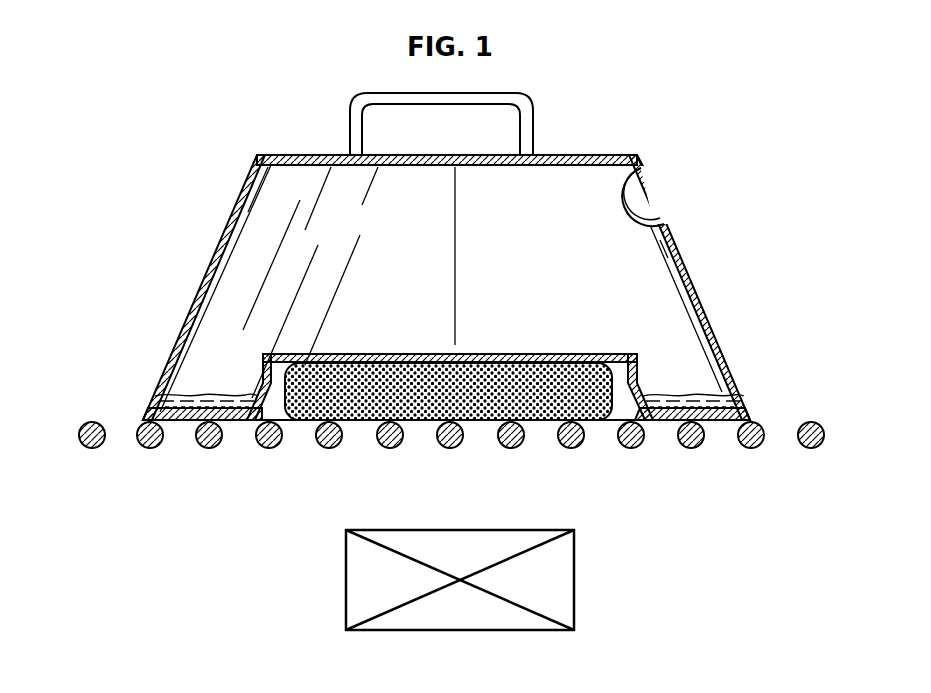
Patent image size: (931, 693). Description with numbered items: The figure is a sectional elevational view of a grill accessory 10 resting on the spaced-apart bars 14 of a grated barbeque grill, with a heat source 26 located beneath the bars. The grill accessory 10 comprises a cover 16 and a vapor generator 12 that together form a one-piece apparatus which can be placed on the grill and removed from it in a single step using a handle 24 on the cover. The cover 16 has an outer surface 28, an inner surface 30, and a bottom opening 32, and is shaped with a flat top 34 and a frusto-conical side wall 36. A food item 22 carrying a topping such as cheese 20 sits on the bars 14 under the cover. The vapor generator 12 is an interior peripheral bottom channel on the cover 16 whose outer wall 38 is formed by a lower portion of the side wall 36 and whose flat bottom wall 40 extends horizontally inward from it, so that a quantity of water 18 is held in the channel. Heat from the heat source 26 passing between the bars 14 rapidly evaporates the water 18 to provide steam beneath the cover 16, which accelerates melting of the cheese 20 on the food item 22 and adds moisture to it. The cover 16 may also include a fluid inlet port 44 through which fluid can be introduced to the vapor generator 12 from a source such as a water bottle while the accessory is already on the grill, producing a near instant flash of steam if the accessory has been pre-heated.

The grill accessory 10 is at (148, 158).
The vapor generator 12 is at (156, 428).
The bars 14 is at (575, 450).
The cover 16 is at (242, 188).
The water 18 is at (689, 386).
The cheese 20 is at (530, 350).
The food item 22 is at (352, 426).
The handle 24 is at (513, 93).
The heat source 26 is at (574, 570).
The outer surface 28 is at (590, 154).
The inner surface 30 is at (672, 272).
The bottom opening 32 is at (278, 454).
The flat top 34 is at (318, 154).
The side wall 36 is at (710, 300).
The outer wall 38 is at (188, 312).
The bottom wall 40 is at (188, 424).
The fluid inlet port 44 is at (656, 192).